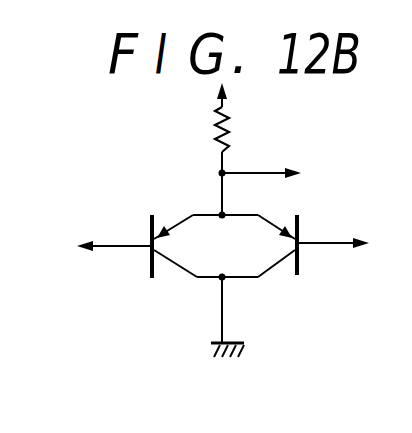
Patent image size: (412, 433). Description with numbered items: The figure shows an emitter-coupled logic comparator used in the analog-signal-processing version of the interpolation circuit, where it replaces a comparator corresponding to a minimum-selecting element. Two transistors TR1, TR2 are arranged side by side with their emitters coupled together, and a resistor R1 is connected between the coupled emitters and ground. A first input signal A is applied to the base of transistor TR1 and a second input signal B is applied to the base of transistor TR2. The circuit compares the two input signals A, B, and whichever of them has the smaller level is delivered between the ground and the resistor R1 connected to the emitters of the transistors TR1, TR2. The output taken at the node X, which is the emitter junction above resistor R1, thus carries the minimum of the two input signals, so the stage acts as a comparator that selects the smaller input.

The resistor R1 is at (242, 129).
The transistor TR1 is at (144, 274).
The transistor TR2 is at (309, 266).
The output terminal X is at (271, 174).
The input signal A is at (109, 229).
The input signal B is at (343, 226).